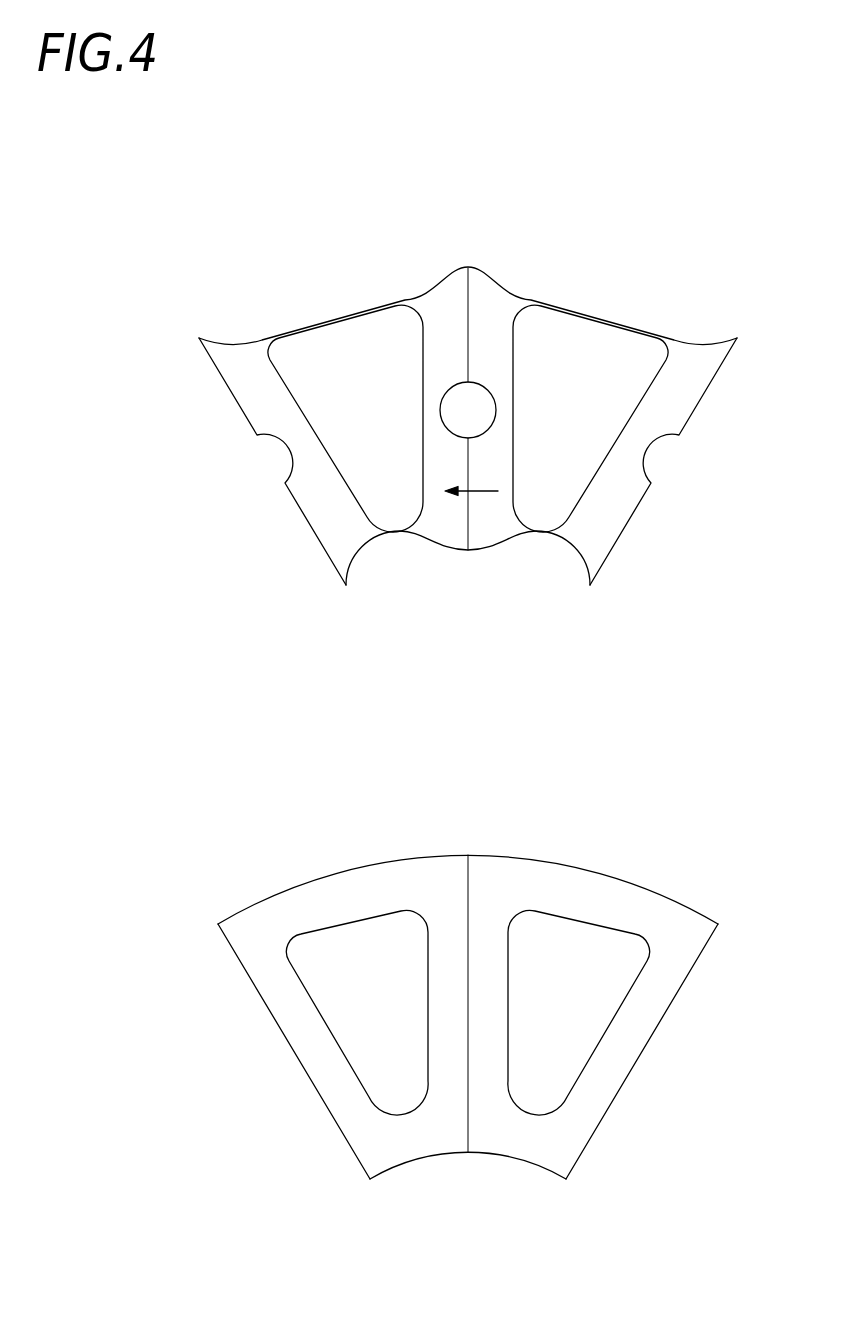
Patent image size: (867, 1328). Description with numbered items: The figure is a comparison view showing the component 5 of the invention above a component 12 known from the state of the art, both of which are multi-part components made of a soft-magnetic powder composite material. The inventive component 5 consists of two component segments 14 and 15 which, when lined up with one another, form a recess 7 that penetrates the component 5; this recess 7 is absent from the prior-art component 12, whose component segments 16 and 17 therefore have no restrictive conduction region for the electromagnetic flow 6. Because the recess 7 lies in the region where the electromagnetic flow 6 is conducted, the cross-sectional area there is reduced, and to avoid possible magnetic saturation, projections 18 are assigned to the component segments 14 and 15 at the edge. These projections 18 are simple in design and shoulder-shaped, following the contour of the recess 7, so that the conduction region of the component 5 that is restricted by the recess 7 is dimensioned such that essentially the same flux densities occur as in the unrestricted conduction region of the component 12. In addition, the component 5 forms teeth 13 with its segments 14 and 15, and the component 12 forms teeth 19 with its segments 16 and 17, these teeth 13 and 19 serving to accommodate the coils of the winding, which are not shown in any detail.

The component 5 is at (624, 232).
The electromagnetic flow 6 is at (479, 495).
The recess 7 is at (475, 412).
The component 12 is at (530, 813).
The teeth 13 is at (323, 388).
The component segment 14 is at (335, 542).
The component segment 15 is at (610, 538).
The component segment 16 is at (308, 907).
The component segment 17 is at (623, 898).
The projections 18 is at (434, 260).
The teeth 19 is at (365, 1010).